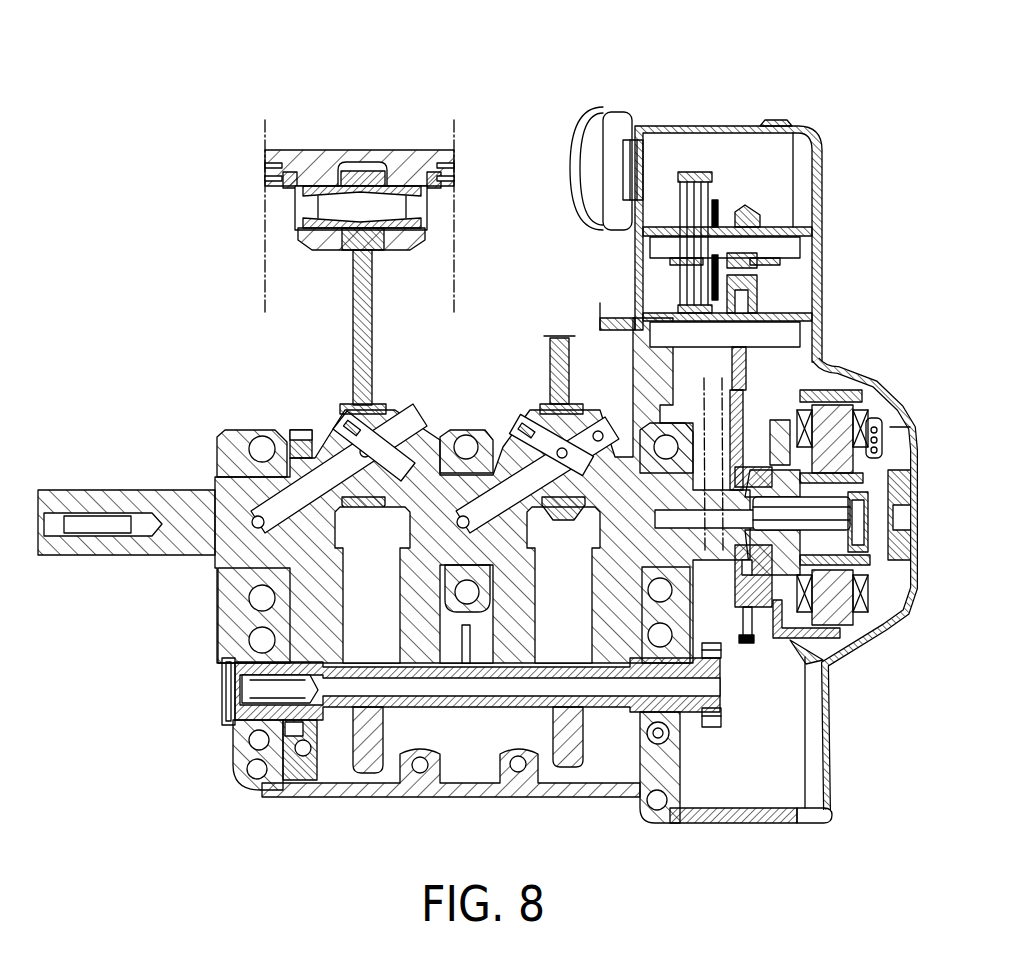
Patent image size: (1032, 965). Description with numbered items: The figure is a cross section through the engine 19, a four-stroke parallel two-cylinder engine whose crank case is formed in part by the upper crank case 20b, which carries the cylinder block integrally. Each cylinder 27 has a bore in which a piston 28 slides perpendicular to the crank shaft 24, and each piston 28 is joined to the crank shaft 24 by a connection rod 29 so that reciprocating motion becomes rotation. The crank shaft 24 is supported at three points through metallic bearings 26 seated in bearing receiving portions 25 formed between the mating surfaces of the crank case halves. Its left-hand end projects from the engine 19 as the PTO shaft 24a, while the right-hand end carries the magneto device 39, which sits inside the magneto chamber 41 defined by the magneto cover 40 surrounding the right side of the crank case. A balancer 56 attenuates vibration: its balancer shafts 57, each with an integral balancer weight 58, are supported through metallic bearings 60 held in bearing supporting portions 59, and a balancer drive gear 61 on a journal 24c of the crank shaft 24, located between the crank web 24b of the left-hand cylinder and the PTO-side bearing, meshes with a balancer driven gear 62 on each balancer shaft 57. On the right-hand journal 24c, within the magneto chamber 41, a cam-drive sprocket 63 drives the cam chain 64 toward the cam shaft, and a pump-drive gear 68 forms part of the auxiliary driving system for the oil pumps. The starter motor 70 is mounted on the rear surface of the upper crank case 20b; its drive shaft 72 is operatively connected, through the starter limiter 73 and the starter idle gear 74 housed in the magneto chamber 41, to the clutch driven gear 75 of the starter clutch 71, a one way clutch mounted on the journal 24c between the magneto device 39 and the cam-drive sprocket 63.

The engine 19 is at (755, 78).
The upper crank case 20b is at (293, 797).
The crank shaft 24 is at (150, 560).
The PTO shaft 24a is at (75, 557).
The crank web 24b is at (345, 620).
The journal 24c is at (246, 588).
The bearing receiving portion 25 is at (222, 452).
The metallic bearing 26 is at (235, 490).
The cylinder 27 is at (456, 258).
The piston 28 is at (389, 160).
The connection rod 29 is at (372, 290).
The magneto device 39 is at (826, 668).
The magneto cover 40 is at (903, 617).
The magneto chamber 41 is at (782, 767).
The balancer 56 is at (421, 713).
The balancer shaft 57 is at (512, 708).
The balancer weight 58 is at (568, 768).
The bearing supporting portion 59 is at (236, 745).
The metallic bearing 60 is at (263, 680).
The balancer drive gear 61 is at (301, 429).
The balancer driven gear 62 is at (314, 778).
The cam-drive sprocket 63 is at (727, 548).
The cam chain 64 is at (825, 356).
The pump-drive gear 68 is at (712, 725).
The starter motor 70 is at (589, 114).
The starter clutch 71 is at (764, 622).
The drive shaft 72 is at (690, 165).
The starter limiter 73 is at (712, 192).
The starter idle gear 74 is at (748, 300).
The clutch driven gear 75 is at (748, 645).